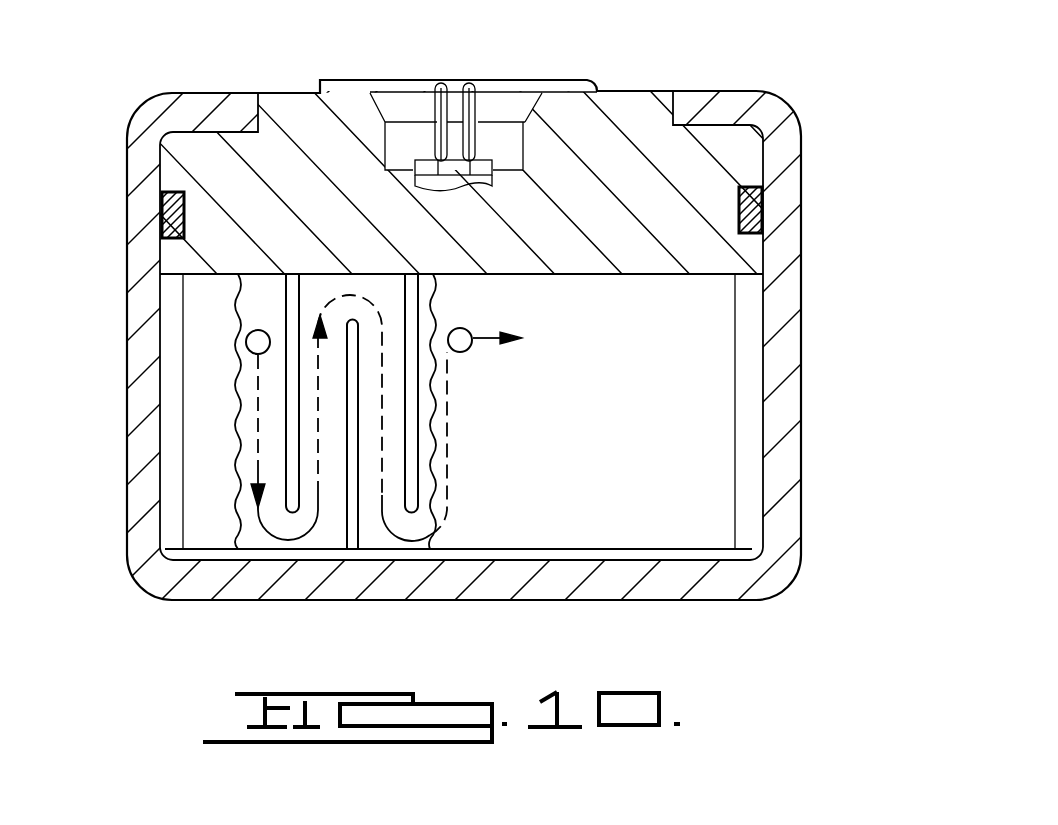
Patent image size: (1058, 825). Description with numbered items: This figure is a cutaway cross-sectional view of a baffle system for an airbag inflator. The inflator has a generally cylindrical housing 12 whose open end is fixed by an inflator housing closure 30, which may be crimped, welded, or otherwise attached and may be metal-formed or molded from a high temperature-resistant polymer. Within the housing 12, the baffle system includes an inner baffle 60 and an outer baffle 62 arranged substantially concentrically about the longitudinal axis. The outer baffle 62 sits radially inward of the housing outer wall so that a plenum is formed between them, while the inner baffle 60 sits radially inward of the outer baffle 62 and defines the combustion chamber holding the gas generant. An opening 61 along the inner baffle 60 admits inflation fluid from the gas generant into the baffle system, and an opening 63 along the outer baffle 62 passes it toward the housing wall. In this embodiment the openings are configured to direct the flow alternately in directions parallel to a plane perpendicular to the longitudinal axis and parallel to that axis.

The housing 12 is at (807, 98).
The inflator housing closure 30 is at (592, 127).
The inner baffle 60 is at (312, 306).
The opening 61 is at (246, 341).
The outer baffle 62 is at (660, 332).
The opening 63 is at (470, 350).